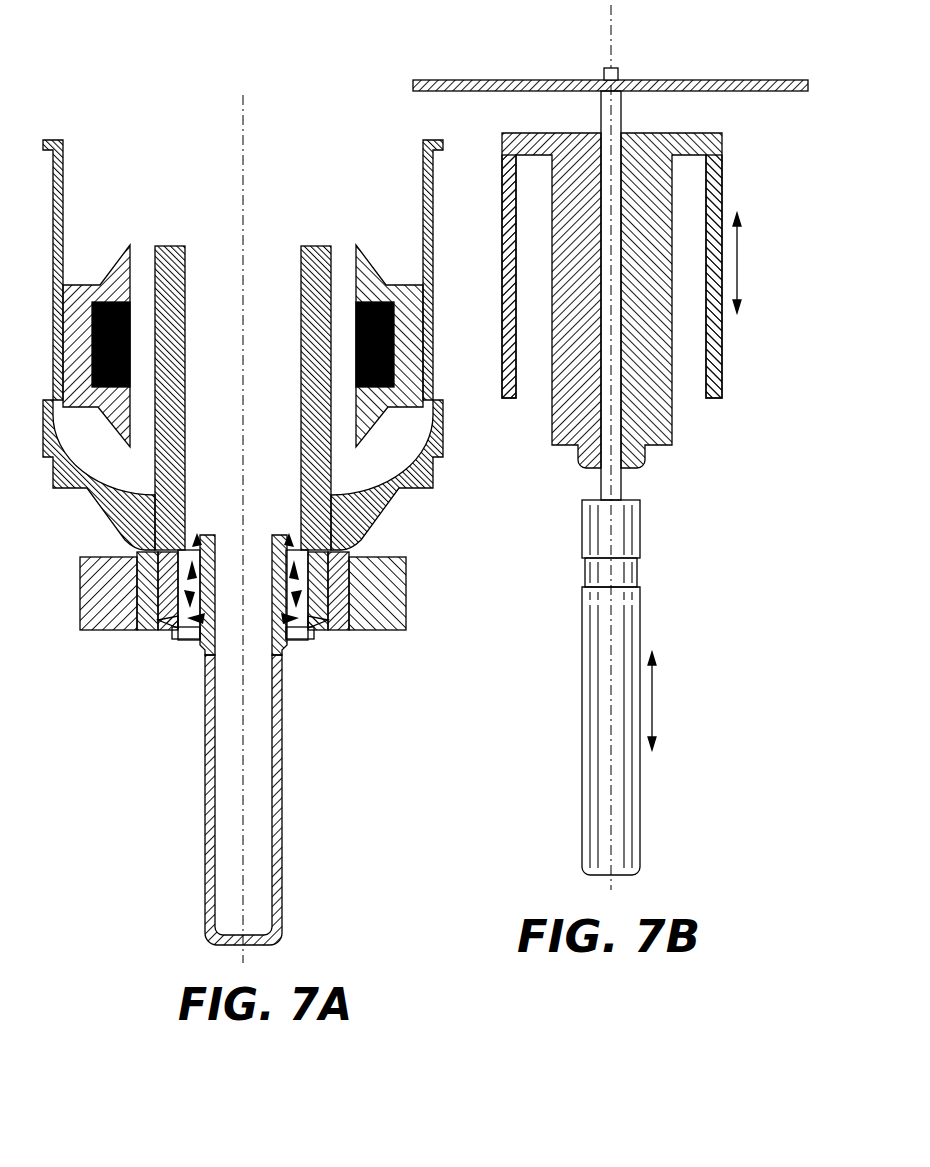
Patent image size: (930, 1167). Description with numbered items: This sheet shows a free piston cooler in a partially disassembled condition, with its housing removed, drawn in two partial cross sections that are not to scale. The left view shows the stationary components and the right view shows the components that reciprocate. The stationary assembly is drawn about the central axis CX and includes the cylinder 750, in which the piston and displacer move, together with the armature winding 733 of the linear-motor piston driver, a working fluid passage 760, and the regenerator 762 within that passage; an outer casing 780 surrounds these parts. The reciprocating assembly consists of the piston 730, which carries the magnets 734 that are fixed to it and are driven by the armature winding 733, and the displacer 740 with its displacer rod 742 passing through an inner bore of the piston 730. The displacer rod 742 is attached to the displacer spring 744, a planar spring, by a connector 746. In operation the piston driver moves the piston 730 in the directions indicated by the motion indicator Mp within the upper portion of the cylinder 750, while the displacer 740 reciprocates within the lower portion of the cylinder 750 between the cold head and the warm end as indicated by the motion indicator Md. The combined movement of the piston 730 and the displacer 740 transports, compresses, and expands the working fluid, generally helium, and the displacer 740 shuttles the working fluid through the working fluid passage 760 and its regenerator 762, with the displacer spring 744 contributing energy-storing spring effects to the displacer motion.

In FIG. 7A, the central axis CX is at (242, 123).
In FIG. 7A, the armature winding 733 is at (128, 381).
In FIG. 7A, the cylinder 750 is at (303, 300).
In FIG. 7A, the working fluid passage 760 is at (290, 585).
In FIG. 7A, the regenerator 762 is at (296, 617).
In FIG. 7A, the casing 780 is at (424, 163).
In FIG. 7B, the piston 730 is at (672, 422).
In FIG. 7B, the magnets 734 is at (722, 350).
In FIG. 7B, the displacer 740 is at (582, 858).
In FIG. 7B, the displacer rod 742 is at (622, 486).
In FIG. 7B, the displacer spring 744 is at (660, 80).
In FIG. 7B, the connector 746 is at (604, 75).
In FIG. 7B, the piston motion indicator Mp is at (737, 262).
In FIG. 7B, the displacer motion indicator Md is at (652, 700).